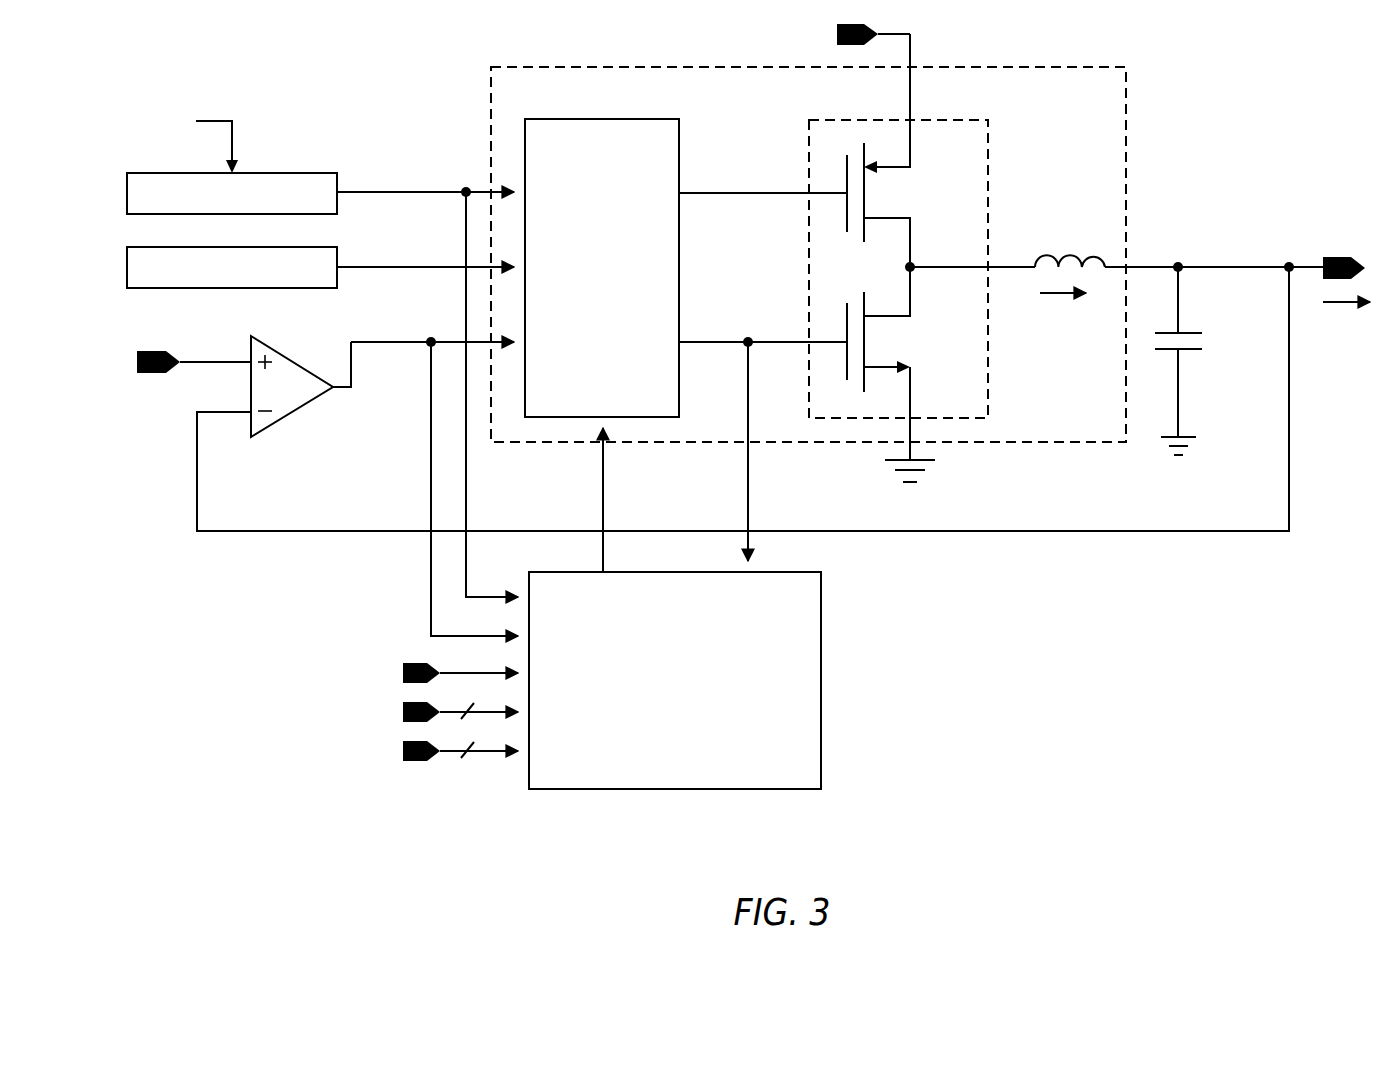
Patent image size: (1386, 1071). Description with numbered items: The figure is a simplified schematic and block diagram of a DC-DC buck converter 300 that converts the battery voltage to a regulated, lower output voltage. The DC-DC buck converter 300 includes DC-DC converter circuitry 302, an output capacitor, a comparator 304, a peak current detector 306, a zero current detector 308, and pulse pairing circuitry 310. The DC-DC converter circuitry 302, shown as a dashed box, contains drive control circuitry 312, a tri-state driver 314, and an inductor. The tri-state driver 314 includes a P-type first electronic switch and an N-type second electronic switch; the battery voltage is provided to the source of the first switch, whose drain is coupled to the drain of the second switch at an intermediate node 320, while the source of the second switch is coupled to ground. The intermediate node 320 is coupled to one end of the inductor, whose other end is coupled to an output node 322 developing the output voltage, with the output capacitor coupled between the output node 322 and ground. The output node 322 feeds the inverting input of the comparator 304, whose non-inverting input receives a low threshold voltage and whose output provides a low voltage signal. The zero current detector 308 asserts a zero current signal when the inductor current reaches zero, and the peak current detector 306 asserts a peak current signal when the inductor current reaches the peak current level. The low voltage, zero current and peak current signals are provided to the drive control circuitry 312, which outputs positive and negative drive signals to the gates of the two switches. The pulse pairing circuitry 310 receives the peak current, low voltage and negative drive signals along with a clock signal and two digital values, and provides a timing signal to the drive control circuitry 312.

The DC-DC buck converter 300 is at (1025, 644).
The DC-DC converter circuitry 302 is at (515, 94).
The comparator 304 is at (270, 400).
The peak current detector 306 is at (308, 173).
The zero current detector 308 is at (298, 288).
The pulse pairing circuitry 310 is at (658, 707).
The drive control circuitry 312 is at (585, 308).
The tri-state driver 314 is at (932, 403).
The intermediate node 320 is at (905, 266).
The output node 322 is at (1181, 262).